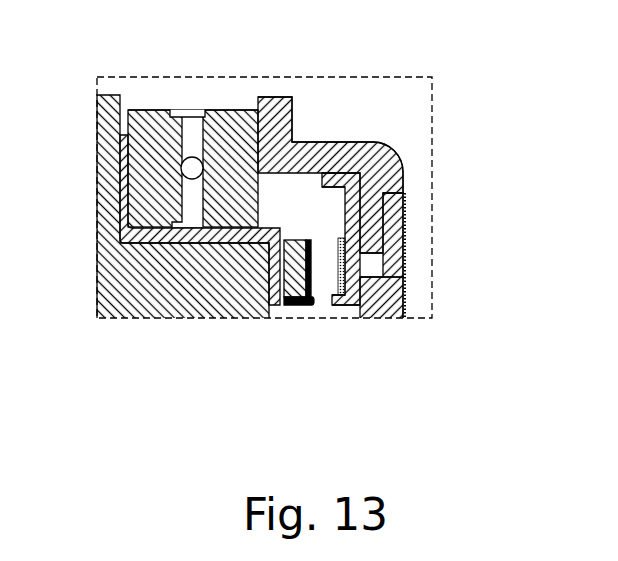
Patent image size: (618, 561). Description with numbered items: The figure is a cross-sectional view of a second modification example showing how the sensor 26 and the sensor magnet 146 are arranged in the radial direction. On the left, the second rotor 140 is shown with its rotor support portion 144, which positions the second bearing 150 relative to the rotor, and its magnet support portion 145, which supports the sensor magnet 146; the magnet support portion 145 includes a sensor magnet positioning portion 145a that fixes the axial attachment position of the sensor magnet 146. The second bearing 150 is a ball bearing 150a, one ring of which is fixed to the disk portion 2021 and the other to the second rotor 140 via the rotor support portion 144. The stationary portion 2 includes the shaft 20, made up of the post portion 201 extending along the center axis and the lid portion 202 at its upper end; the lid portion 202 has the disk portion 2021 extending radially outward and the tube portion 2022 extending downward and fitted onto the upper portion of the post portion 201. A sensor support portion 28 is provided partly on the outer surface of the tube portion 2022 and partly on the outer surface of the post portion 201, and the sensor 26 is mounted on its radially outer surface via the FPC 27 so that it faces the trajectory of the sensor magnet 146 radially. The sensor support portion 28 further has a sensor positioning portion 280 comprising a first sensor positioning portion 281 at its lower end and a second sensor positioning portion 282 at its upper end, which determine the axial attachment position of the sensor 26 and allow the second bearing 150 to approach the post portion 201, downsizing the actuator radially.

The stationary portion 2 is at (411, 303).
The shaft 20 is at (428, 187).
The post portion 201 is at (400, 218).
The lid portion 202 is at (404, 175).
The disk portion 2021 is at (332, 152).
The tube portion 2022 is at (403, 198).
The sensor 26 is at (365, 260).
The flexible printed circuits (FPC) 27 is at (404, 238).
The sensor support portion 28 is at (382, 284).
The sensor positioning portion 280 is at (389, 277).
The first sensor positioning portion 281 is at (342, 306).
The second sensor positioning portion 282 is at (332, 188).
The second rotor 140 is at (96, 122).
The rotor support portion 144 is at (148, 247).
The magnet support portion 145 is at (267, 273).
The sensor magnet positioning portion 145a is at (292, 305).
The sensor magnet 146 is at (299, 305).
The second bearing 150 is at (158, 100).
The ball bearing 150a is at (143, 112).